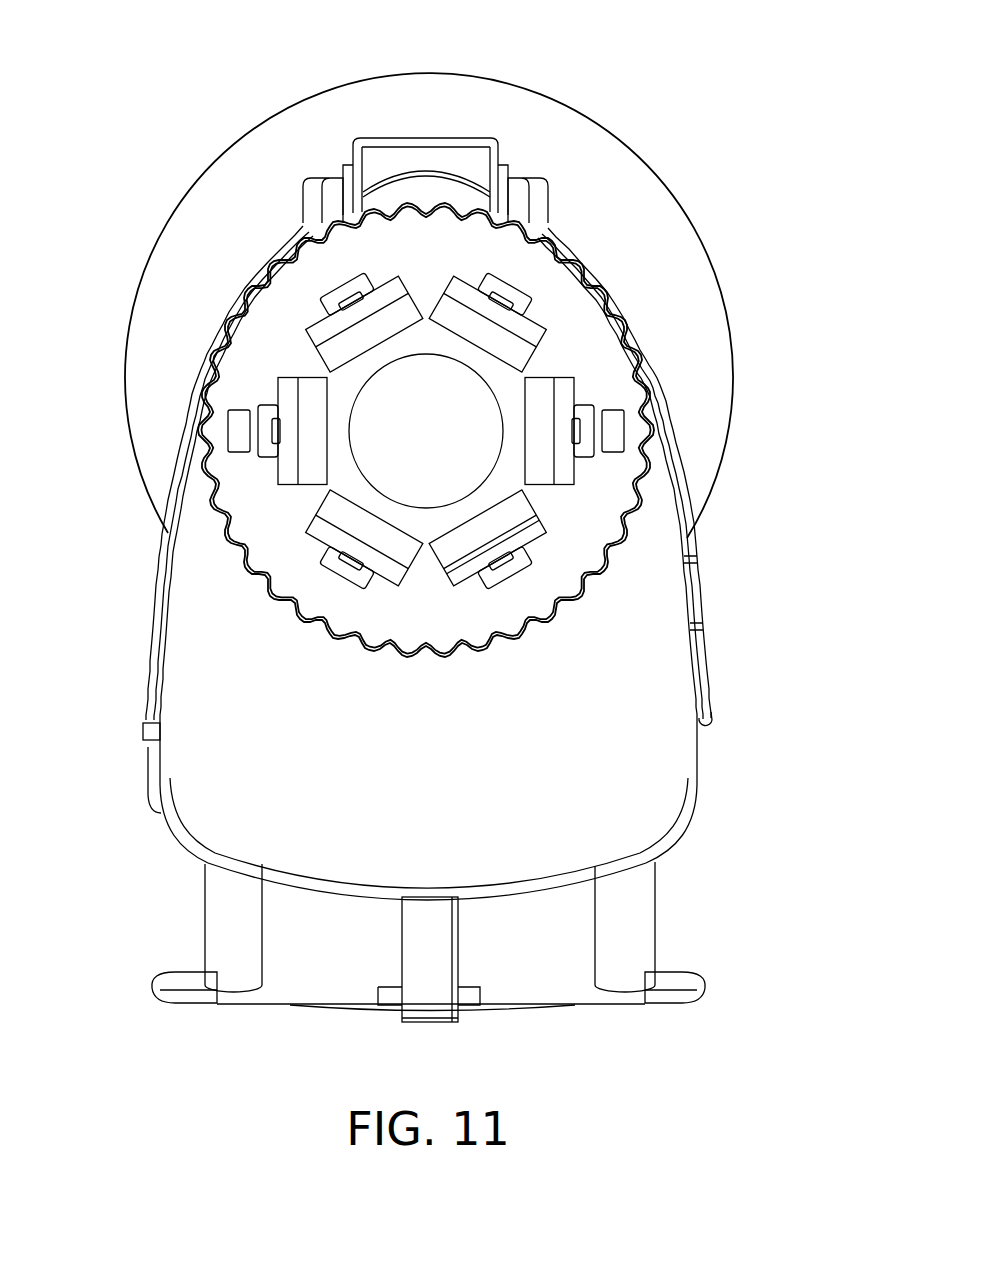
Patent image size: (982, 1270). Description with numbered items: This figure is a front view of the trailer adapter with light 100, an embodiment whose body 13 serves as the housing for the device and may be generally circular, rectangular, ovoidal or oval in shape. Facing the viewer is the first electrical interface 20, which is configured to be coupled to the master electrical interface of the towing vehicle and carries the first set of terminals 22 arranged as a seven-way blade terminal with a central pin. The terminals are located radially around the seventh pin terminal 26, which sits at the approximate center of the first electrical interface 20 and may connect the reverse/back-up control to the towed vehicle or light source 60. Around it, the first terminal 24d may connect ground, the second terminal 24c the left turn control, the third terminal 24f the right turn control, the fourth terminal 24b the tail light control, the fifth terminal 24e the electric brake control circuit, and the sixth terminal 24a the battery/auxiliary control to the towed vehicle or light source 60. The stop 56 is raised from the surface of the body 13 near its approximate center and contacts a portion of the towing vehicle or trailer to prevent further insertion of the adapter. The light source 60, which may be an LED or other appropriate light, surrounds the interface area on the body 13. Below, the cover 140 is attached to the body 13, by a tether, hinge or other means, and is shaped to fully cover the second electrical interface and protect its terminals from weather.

The trailer adapter with light 100 is at (640, 65).
The light source 60 is at (632, 170).
The stop 56 is at (383, 138).
The first electrical interface 20 is at (570, 297).
The first set of terminals 22 is at (148, 215).
The sixth terminal 24a is at (313, 333).
The fourth terminal 24b is at (543, 337).
The second terminal 24c is at (547, 470).
The first terminal 24d is at (517, 547).
The fifth terminal 24e is at (360, 532).
The third terminal 24f is at (290, 437).
The seventh pin terminal 26 is at (411, 425).
The body 13 is at (623, 805).
The cover 140 is at (633, 942).